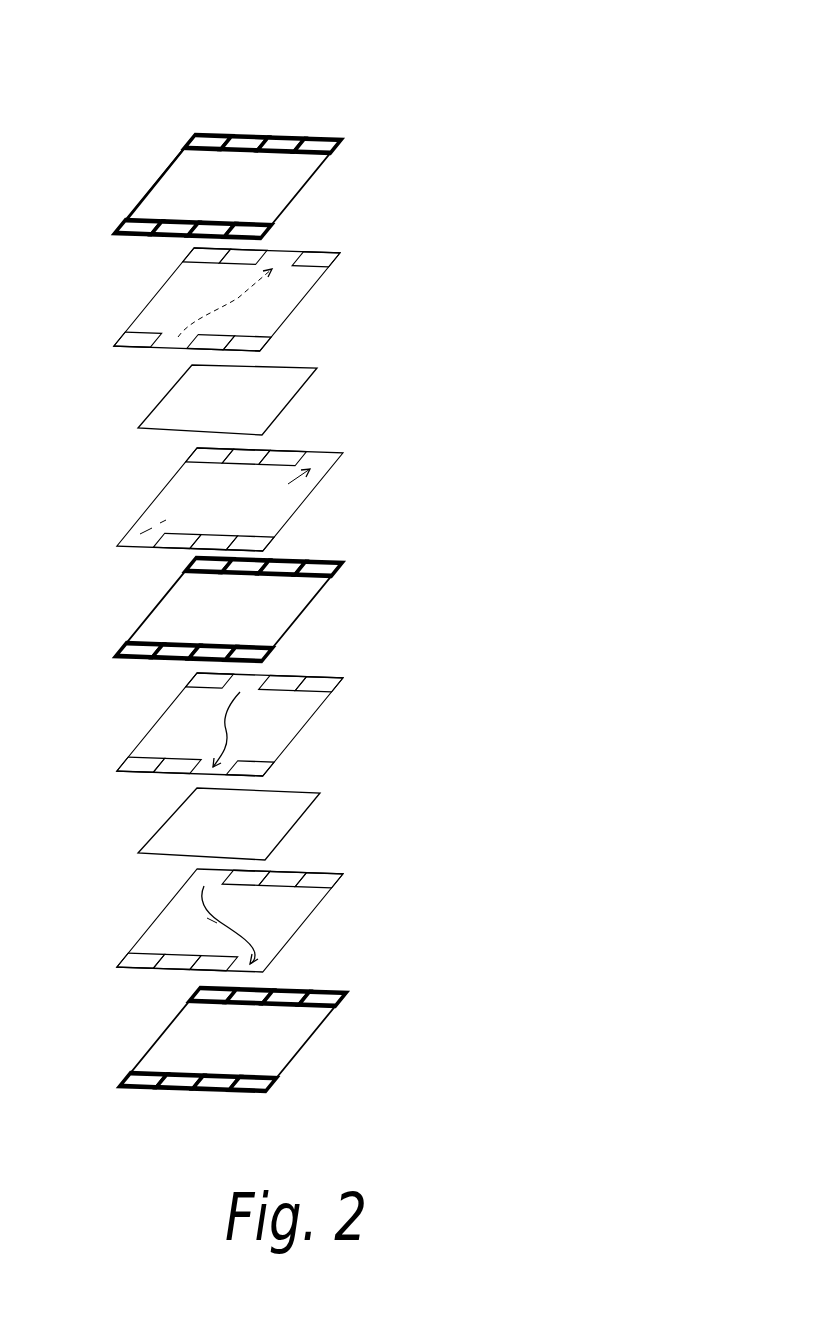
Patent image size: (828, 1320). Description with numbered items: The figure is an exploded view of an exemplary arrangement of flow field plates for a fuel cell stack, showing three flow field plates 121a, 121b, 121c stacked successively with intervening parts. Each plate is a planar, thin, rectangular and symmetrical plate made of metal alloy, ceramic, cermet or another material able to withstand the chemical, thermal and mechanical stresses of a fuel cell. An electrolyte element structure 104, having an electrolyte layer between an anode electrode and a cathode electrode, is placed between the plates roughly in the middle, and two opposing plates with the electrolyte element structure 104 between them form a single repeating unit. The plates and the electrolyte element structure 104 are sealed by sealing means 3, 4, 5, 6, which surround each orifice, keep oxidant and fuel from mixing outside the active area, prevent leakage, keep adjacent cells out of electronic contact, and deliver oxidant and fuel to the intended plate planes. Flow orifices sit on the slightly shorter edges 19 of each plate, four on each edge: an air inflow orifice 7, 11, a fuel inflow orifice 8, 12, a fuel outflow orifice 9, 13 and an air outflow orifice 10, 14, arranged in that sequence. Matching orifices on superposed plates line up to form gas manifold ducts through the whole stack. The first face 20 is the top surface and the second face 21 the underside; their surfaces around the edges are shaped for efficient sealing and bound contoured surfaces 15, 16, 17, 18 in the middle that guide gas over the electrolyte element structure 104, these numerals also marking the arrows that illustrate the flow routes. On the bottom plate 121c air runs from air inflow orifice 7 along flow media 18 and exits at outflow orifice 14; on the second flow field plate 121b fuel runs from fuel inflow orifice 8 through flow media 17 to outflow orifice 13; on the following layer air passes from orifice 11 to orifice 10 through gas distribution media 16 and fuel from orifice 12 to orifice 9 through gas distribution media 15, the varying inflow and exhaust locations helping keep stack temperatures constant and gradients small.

The flow field plate 121a is at (287, 185).
The second flow field plate 121b is at (287, 610).
The first flow field plate 121c is at (287, 1030).
The sealing means 3 is at (290, 317).
The sealing means 4 is at (298, 512).
The sealing means 5 is at (293, 733).
The sealing means 6 is at (293, 927).
The electrolyte element structure 104 is at (273, 393).
The air inflow orifice 7 is at (207, 138).
The fuel inflow orifice 8 is at (246, 139).
The fuel outflow orifice 9 is at (282, 140).
The air outflow orifice 10 is at (311, 142).
The air inflow orifice 11 is at (142, 1086).
The fuel inflow orifice 12 is at (178, 1090).
The fuel outflow orifice 13 is at (215, 1091).
The air outflow orifice 14 is at (260, 1090).
The gas distribution media 15 is at (240, 297).
The gas distribution media 16 is at (157, 522).
The flow media 17 is at (238, 692).
The flow media 18 is at (200, 893).
The shorter edge 19 is at (152, 238).
The first face 20 is at (178, 163).
The second face 21 is at (130, 243).